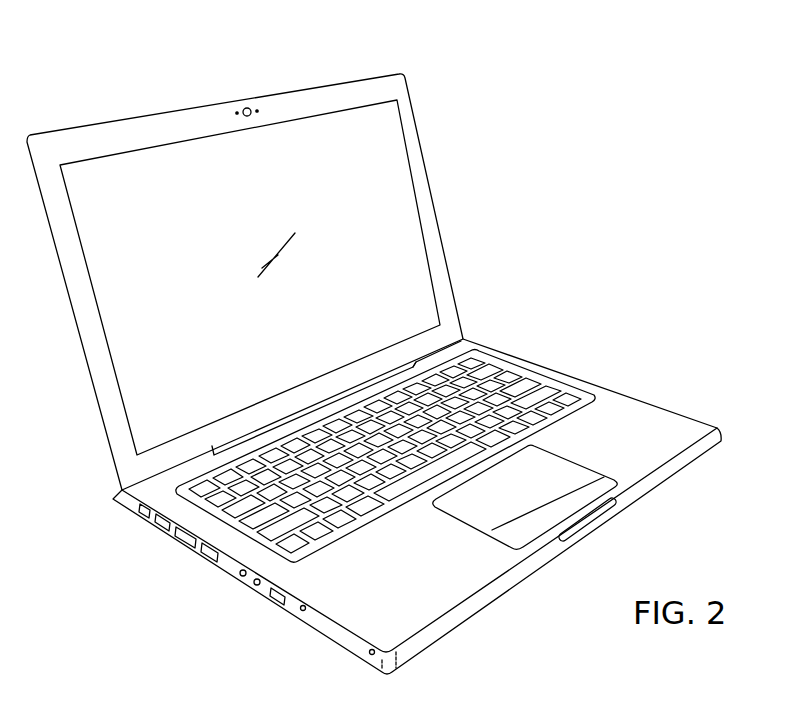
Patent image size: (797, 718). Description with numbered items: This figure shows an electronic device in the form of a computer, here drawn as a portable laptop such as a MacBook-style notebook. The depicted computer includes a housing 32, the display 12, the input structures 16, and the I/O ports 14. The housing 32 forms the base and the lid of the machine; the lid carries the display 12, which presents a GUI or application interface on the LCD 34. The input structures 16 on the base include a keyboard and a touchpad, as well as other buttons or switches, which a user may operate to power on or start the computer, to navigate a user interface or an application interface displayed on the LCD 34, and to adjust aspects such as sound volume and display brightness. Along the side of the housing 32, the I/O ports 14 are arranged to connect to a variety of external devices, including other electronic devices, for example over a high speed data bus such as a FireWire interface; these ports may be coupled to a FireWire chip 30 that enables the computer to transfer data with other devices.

The FireWire chip 30 is at (190, 57).
The display 12 is at (395, 223).
The LCD 34 is at (383, 153).
The input structures 16 is at (518, 383).
The housing 32 is at (636, 396).
The I/O ports 14 is at (200, 558).